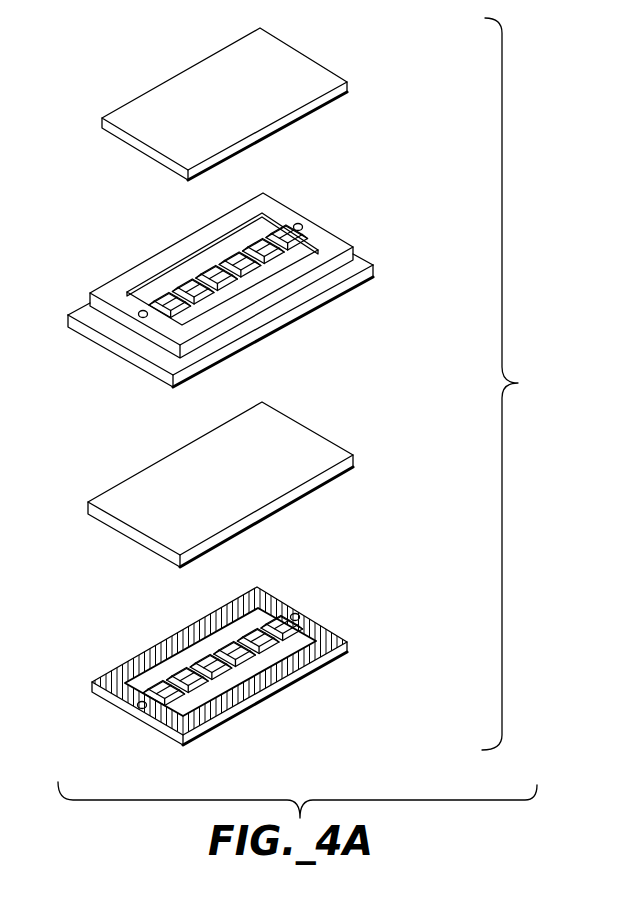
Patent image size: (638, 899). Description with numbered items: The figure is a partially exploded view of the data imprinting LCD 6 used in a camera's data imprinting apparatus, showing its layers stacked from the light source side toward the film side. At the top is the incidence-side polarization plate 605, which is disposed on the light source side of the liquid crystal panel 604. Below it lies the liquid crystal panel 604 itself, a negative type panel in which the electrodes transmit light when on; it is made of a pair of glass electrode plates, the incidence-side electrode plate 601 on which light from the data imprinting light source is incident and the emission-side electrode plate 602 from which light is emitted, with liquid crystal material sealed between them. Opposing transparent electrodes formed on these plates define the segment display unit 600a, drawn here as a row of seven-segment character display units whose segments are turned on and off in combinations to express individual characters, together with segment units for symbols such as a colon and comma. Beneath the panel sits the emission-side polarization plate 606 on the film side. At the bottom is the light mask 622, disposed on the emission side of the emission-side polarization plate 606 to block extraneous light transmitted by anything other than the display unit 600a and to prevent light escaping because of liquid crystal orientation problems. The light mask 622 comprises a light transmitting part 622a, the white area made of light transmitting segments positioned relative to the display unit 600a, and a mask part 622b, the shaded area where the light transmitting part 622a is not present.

The data imprinting LCD 6 is at (510, 384).
The segment display unit 600a is at (178, 282).
The incidence-side electrode plate 601 is at (313, 235).
The emission-side electrode plate 602 is at (315, 303).
The liquid crystal panel 604 is at (387, 268).
The incidence-side polarization plate 605 is at (317, 60).
The emission-side polarization plate 606 is at (312, 447).
The light mask 622 is at (247, 647).
The light transmitting part 622a is at (243, 660).
The mask part 622b is at (313, 632).